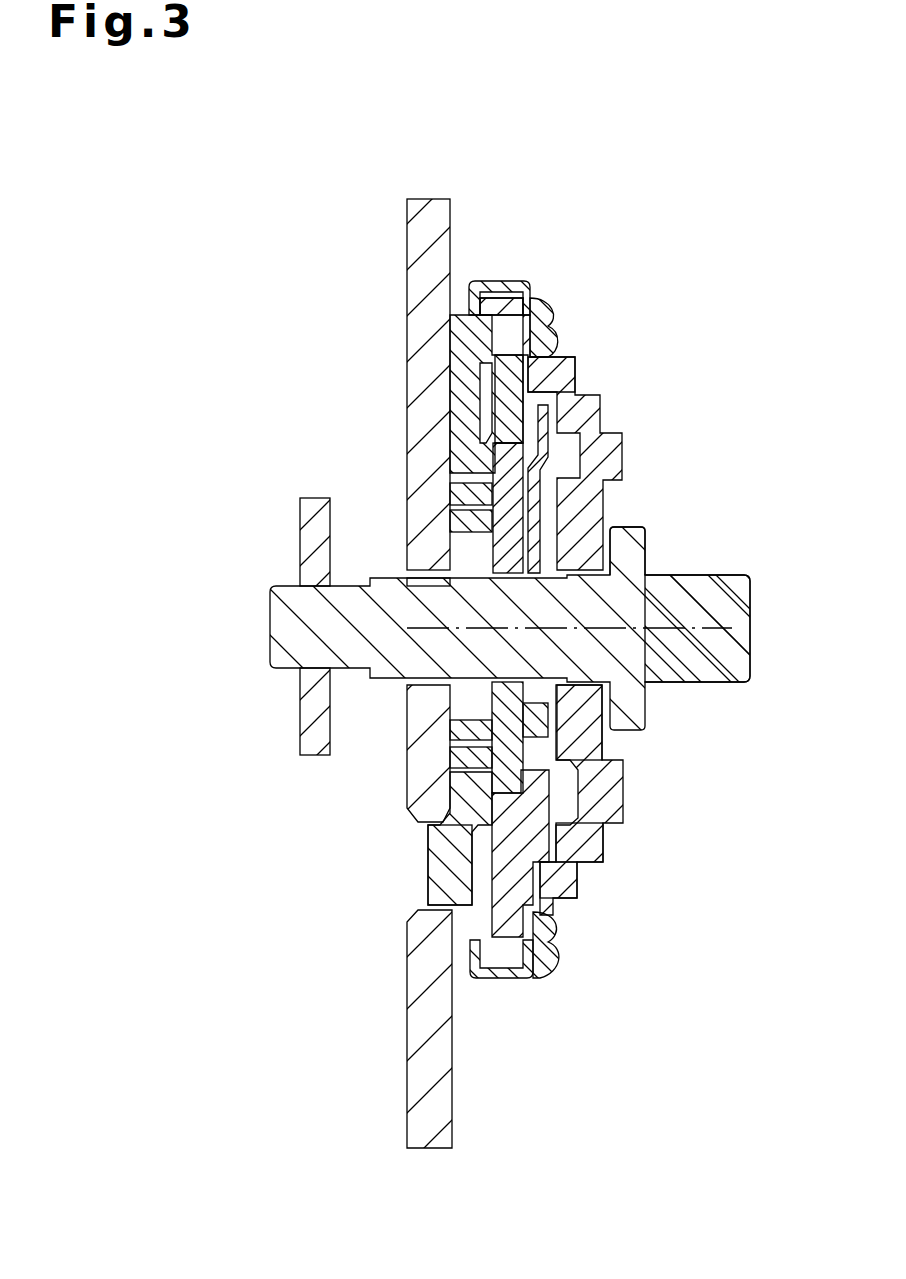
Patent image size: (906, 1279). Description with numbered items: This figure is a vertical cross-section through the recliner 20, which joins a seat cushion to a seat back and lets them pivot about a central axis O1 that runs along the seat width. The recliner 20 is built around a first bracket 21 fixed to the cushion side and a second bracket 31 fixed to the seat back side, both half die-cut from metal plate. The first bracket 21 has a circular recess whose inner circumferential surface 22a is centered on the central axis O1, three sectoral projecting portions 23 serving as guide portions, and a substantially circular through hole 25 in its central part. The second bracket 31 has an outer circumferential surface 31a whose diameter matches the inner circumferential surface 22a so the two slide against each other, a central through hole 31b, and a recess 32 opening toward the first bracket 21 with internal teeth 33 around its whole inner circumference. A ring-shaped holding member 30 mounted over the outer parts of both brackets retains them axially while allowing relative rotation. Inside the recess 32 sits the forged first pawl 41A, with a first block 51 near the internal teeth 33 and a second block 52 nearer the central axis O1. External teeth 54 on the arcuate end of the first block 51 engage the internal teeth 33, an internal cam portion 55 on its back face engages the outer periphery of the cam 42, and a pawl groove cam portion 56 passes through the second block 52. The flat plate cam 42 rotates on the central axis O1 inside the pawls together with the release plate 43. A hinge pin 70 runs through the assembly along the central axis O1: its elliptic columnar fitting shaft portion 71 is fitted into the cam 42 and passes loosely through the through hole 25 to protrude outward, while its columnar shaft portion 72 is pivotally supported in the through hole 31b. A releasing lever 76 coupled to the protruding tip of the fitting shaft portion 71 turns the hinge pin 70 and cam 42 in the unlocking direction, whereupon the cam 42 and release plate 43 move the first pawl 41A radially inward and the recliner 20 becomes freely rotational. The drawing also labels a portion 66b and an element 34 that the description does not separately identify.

The recliner 20 is at (616, 325).
The first bracket 21 is at (460, 325).
The inner circumferential surface 22a is at (490, 323).
The projecting portion 23 is at (532, 385).
The through hole 25 is at (450, 762).
The holding member 30 is at (531, 283).
The second bracket 31 is at (600, 402).
The outer circumferential surface 31a is at (508, 327).
The through hole 31b is at (572, 685).
The recess 32 is at (520, 380).
The internal teeth 33 is at (500, 882).
The coupling member 34 is at (515, 462).
The first pawl 41A is at (540, 805).
The cam 42 is at (502, 698).
The release plate 43 is at (548, 460).
The first block 51 is at (518, 880).
The second block 52 is at (540, 838).
The external teeth 54 is at (544, 912).
The internal cam portion 55 is at (478, 795).
The pawl groove cam portion 56 is at (557, 745).
The shaft portion 66b is at (510, 628).
The hinge pin 70 is at (697, 585).
The fitting shaft portion 71 is at (430, 582).
The shaft portion 72 is at (623, 597).
The releasing lever 76 is at (312, 498).
The central axis O1 is at (710, 612).